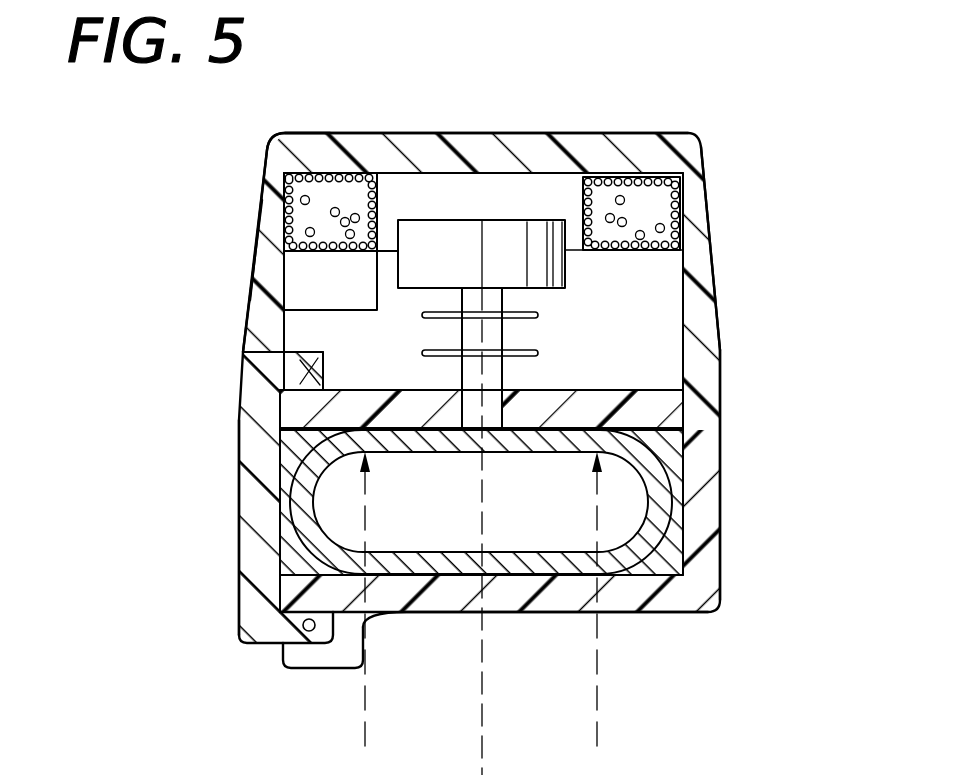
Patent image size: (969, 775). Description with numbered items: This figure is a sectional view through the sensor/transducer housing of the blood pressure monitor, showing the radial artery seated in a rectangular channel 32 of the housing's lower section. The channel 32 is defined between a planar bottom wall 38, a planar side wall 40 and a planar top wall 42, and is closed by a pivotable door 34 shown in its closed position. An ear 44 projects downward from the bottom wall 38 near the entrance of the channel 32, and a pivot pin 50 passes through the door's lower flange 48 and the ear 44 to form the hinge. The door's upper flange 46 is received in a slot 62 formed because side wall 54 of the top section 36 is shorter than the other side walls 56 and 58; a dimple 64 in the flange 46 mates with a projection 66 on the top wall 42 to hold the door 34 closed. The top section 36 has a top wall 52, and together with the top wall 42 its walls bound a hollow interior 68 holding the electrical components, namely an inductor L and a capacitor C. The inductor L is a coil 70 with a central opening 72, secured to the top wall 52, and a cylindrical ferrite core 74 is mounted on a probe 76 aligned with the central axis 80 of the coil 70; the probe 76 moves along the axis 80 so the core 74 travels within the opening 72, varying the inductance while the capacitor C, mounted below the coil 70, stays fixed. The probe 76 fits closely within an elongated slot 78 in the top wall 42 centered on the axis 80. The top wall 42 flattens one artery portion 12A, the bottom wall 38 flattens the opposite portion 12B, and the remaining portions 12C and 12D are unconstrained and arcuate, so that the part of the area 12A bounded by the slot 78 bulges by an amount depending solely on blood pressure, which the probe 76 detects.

The flattened artery portion 12A is at (520, 440).
The flattened artery portion 12B is at (525, 580).
The unconstrained artery portion 12C is at (300, 497).
The unconstrained artery portion 12D is at (657, 483).
The rectangular channel 32 is at (287, 555).
The pivotable door 34 is at (250, 537).
The top section 36 is at (578, 133).
The bottom wall 38 is at (513, 600).
The side wall 40 is at (703, 538).
The top wall 42 is at (653, 412).
The ear 44 is at (297, 660).
The upper flange 46 is at (290, 377).
The lower flange 48 is at (283, 623).
The pivot pin 50 is at (315, 628).
The top wall 52 is at (481, 147).
The side wall 54 is at (267, 205).
The side wall 56 is at (635, 305).
The side wall 58 is at (718, 335).
The slot 62 is at (245, 323).
The dimple 64 is at (325, 365).
The projection 66 is at (302, 387).
The hollow interior 68 is at (585, 300).
The coil 70 is at (285, 173).
The central opening 72 is at (378, 198).
The ferrite core 74 is at (543, 232).
The probe 76 is at (500, 378).
The elongated slot 78 is at (448, 400).
The central axis 80 is at (485, 715).
The inductor L is at (328, 185).
The capacitor C is at (300, 282).